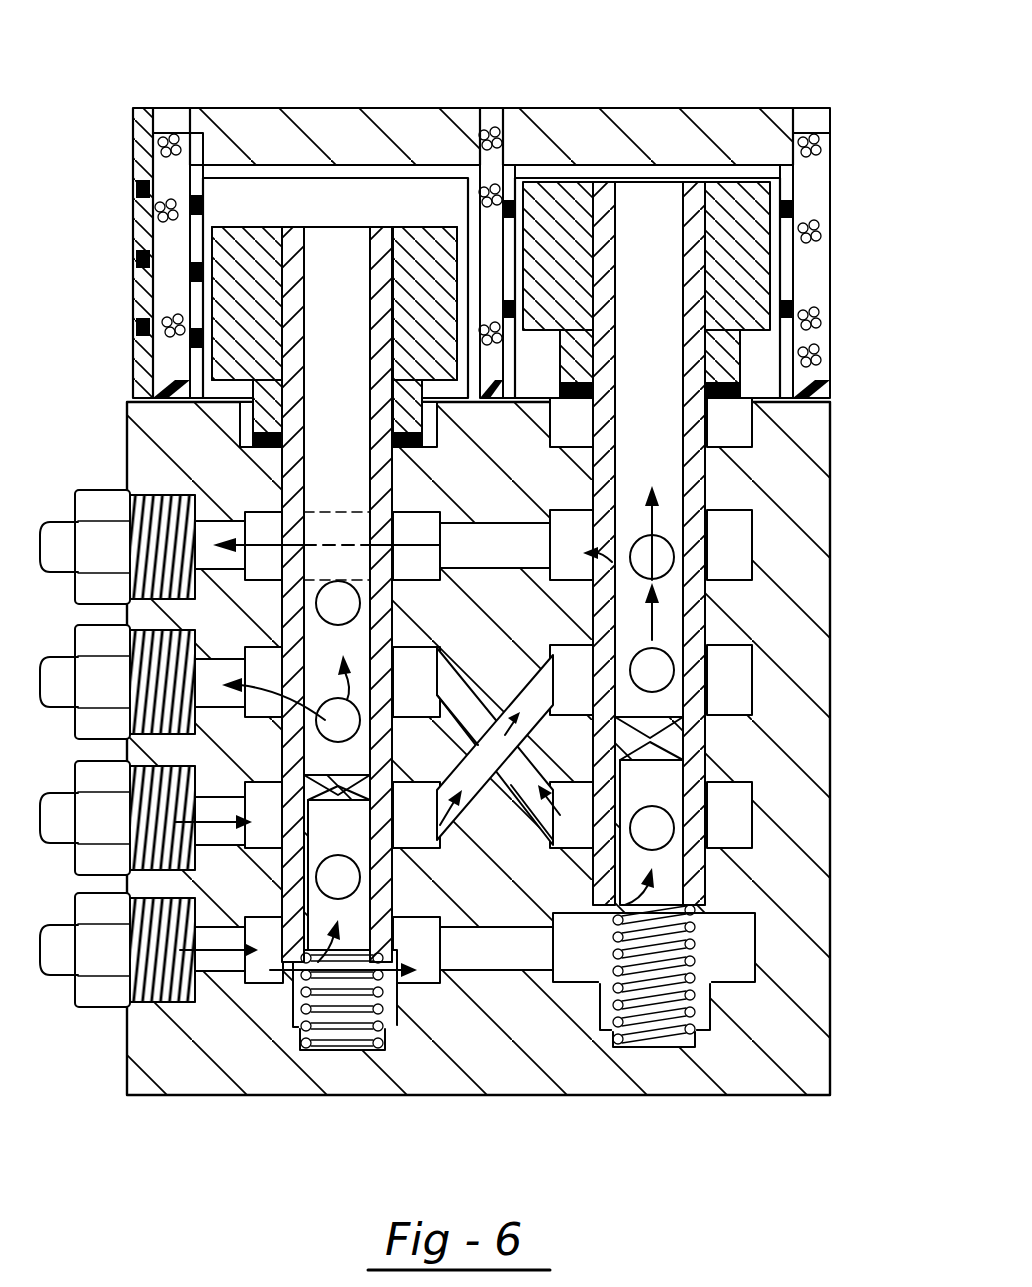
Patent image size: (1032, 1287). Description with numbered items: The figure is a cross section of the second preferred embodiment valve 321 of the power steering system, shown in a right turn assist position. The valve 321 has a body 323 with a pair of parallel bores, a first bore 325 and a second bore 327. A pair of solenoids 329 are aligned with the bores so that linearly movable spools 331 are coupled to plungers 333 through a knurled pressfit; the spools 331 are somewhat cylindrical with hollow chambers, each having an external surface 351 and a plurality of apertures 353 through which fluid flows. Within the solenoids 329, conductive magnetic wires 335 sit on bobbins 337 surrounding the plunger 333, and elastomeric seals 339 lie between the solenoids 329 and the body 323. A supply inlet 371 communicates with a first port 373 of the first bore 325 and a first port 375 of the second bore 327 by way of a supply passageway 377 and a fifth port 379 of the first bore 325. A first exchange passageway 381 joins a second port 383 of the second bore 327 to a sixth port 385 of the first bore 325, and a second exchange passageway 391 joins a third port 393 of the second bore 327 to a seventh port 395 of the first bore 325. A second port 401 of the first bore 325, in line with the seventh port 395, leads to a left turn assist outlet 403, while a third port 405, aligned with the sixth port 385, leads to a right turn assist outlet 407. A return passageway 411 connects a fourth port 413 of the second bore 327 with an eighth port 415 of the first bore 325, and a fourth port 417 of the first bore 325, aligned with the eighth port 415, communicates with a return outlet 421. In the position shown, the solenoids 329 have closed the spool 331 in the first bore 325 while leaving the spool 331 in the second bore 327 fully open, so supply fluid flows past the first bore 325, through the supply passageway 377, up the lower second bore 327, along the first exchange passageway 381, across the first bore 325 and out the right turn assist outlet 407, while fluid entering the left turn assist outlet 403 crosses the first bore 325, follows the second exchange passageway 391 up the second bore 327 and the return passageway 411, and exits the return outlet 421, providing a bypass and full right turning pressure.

The valve 321 is at (455, 602).
The body 323 is at (495, 1070).
The first bore 325 is at (310, 1050).
The second bore 327 is at (712, 1022).
The solenoids 329 is at (342, 120).
The spools 331 is at (298, 440).
The plungers 333 is at (250, 257).
The conductive magnetic wires 335 is at (160, 150).
The bobbins 337 is at (195, 228).
The elastomeric seals 339 is at (165, 380).
The external surface 351 is at (288, 905).
The apertures 353 is at (330, 512).
The supply inlet 371 is at (135, 990).
The first port 373 is at (262, 1010).
The first port 375 is at (585, 980).
The supply passageway 377 is at (493, 953).
The fifth port 379 is at (497, 893).
The first exchange passageway 381 is at (452, 800).
The second port 383 is at (555, 830).
The sixth port 385 is at (440, 635).
The second exchange passageway 391 is at (515, 695).
The third port 393 is at (600, 642).
The seventh port 395 is at (430, 850).
The second port 401 is at (175, 850).
The left turn assist outlet 403 is at (158, 805).
The third port 405 is at (243, 703).
The right turn assist outlet 407 is at (158, 678).
The return passageway 411 is at (480, 540).
The fourth port 413 is at (545, 520).
The eighth port 415 is at (445, 520).
The fourth port 417 is at (222, 520).
The return outlet 421 is at (143, 485).